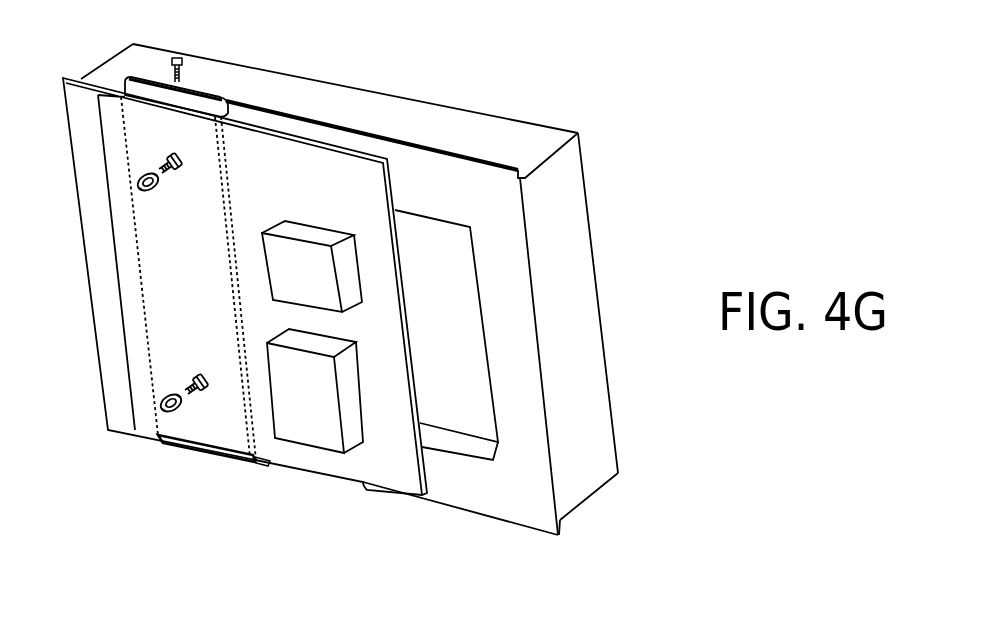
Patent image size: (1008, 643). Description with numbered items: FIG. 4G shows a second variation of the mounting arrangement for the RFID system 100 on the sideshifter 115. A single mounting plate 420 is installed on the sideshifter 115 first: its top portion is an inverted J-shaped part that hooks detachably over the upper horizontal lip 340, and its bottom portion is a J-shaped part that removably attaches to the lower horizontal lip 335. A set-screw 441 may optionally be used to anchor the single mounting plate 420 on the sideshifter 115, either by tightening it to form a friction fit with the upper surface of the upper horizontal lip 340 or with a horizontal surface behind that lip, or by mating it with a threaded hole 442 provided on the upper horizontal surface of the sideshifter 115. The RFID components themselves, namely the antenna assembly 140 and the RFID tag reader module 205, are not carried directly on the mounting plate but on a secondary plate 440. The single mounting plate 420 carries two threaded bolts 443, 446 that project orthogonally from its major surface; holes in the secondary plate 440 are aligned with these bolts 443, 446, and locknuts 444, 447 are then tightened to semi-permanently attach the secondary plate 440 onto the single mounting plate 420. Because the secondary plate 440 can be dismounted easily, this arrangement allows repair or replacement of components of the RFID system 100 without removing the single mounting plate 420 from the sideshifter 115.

The RFID system 100 is at (212, 527).
The sideshifter 115 is at (622, 371).
The antenna assembly 140 is at (279, 279).
The RFID tag reader module 205 is at (282, 404).
The lower horizontal lip 335 is at (561, 535).
The upper horizontal lip 340 is at (523, 181).
The single mounting plate 420 is at (199, 474).
The secondary plate 440 is at (261, 192).
The set-screw 441 is at (188, 66).
The threaded hole 442 is at (178, 91).
The threaded bolt 443 is at (165, 175).
The locknut 444 is at (152, 195).
The threaded bolt 446 is at (190, 394).
The locknut 447 is at (172, 394).